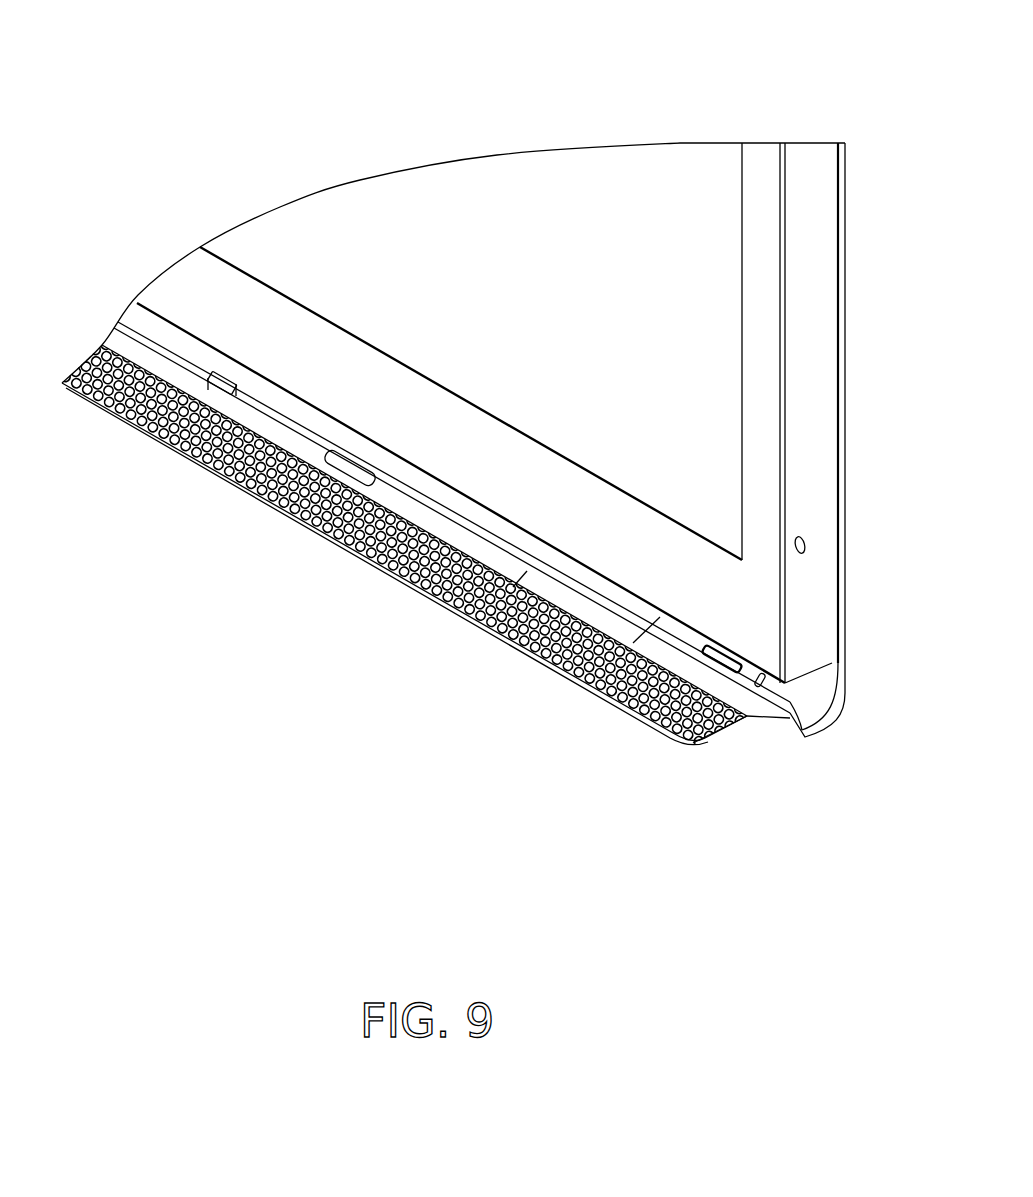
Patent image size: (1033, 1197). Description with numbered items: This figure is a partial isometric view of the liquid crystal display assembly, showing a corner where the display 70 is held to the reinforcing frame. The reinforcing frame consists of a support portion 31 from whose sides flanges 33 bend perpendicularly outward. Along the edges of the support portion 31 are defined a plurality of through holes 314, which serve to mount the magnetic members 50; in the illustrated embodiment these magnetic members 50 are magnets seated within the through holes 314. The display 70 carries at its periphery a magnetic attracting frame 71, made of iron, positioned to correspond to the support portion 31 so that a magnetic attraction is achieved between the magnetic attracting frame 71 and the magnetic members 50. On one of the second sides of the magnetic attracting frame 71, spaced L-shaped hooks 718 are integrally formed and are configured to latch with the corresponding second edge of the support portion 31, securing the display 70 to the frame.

The display 70 is at (498, 212).
The L-shaped hooks 718 is at (138, 427).
The magnetic members 50 is at (320, 530).
The through holes 314 is at (382, 568).
The support portion 31 is at (477, 627).
The magnetic attracting frame 71 is at (580, 687).
The flanges 33 is at (713, 728).